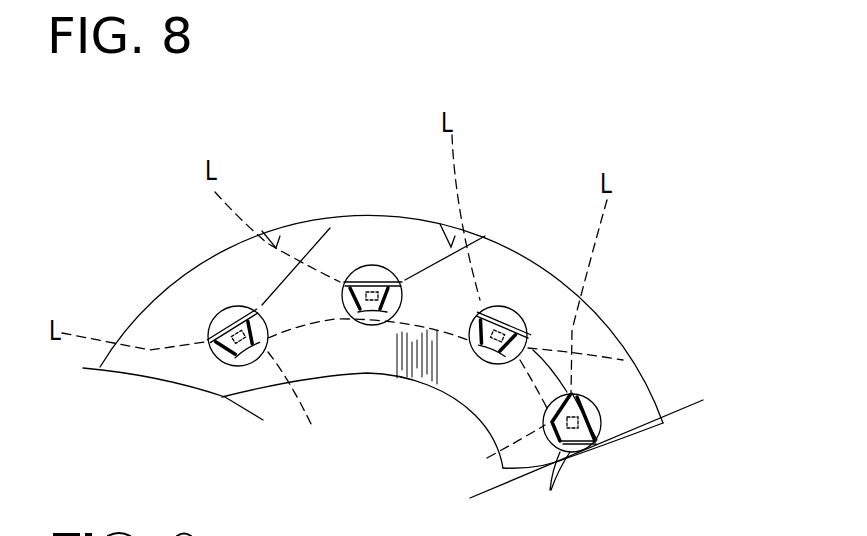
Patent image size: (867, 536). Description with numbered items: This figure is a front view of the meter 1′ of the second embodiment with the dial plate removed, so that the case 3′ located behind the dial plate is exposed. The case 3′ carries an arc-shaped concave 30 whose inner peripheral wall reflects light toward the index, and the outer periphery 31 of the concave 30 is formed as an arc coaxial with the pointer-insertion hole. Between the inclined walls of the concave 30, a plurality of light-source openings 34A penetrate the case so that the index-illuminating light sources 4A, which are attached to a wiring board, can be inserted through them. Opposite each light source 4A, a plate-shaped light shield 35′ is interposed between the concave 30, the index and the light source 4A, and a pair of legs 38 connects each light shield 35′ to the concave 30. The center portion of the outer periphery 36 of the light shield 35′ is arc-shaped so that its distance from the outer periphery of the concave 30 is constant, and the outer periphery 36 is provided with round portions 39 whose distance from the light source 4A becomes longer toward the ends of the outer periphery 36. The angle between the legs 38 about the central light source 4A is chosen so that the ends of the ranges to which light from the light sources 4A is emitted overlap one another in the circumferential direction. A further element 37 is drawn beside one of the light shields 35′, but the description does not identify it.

The meter 1′ is at (712, 350).
The yoke segment 3′ is at (603, 313).
The concave 30 is at (582, 320).
The outer periphery of the concave 31 is at (612, 332).
The light-source opening 34A is at (207, 340).
The light shield 35′ is at (233, 365).
The outer periphery of the light shield 36 is at (260, 307).
The hatched region 37 is at (240, 366).
The leg 38 is at (257, 305).
The round portion 39 is at (227, 308).
The index-illuminating light source 4A is at (487, 363).